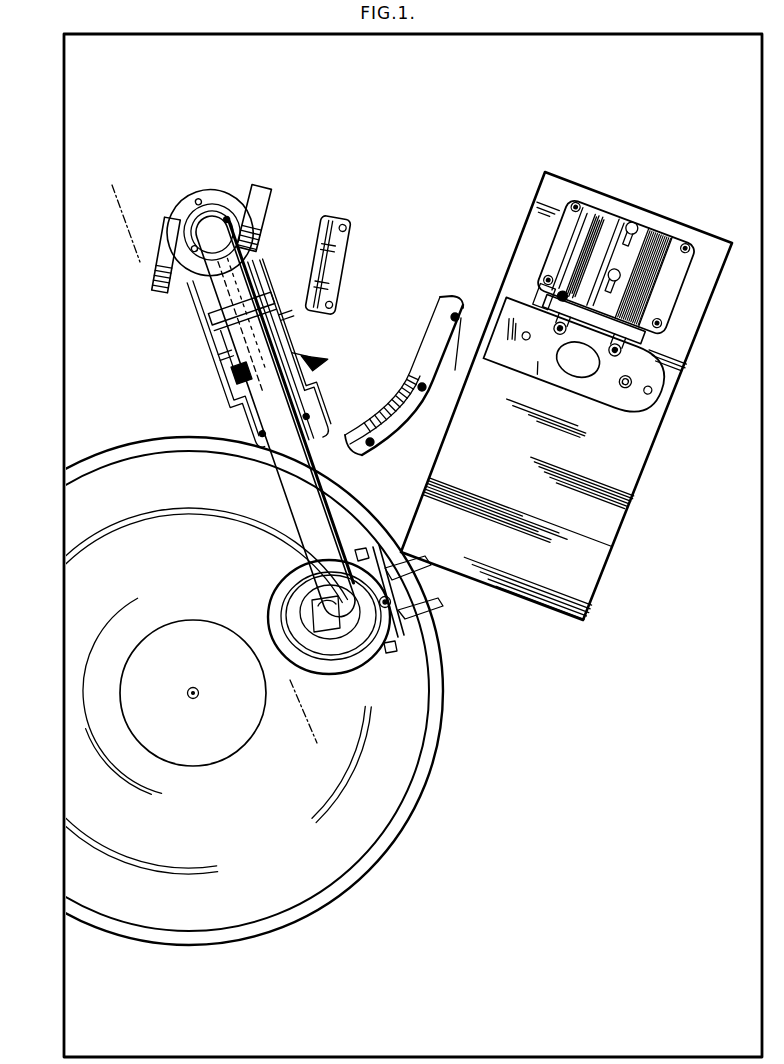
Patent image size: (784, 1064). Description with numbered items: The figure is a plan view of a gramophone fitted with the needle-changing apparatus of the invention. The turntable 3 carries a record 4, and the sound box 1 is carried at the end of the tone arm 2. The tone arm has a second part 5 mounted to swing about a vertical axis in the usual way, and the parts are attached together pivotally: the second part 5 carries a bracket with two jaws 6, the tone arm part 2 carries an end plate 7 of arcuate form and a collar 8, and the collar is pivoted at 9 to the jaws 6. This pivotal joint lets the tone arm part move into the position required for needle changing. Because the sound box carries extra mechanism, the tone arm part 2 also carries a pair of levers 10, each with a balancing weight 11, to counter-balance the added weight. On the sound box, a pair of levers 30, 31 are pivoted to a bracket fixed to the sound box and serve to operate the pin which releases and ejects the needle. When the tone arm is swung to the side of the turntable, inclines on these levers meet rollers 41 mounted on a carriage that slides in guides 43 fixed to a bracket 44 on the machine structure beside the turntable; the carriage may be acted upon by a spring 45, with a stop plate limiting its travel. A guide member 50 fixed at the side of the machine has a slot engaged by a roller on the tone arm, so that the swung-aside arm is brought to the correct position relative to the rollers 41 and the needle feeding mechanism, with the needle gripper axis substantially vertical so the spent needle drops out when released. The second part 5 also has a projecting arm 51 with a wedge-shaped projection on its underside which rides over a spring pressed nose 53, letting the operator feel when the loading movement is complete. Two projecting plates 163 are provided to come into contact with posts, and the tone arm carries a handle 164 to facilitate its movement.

The sound box 1 is at (298, 555).
The tone arm 2 is at (300, 473).
The turntable 3 is at (453, 711).
The record 4 is at (402, 757).
The second part 5 is at (212, 226).
The jaws 6 is at (293, 319).
The end plate 7 is at (228, 330).
The collar 8 is at (228, 384).
The pivot 9 is at (312, 355).
The levers 10 is at (267, 266).
The balancing weight 11 is at (165, 234).
The lever 30 is at (417, 565).
The lever 31 is at (437, 600).
The rollers 41 is at (560, 323).
The guides 43 is at (637, 337).
The bracket 44 is at (563, 240).
The spring 45 is at (560, 297).
The guide member 50 is at (427, 350).
The projecting arm 51 is at (333, 307).
The spring pressed nose 53 is at (332, 241).
The projecting plates 163 is at (363, 557).
The handle 164 is at (300, 580).